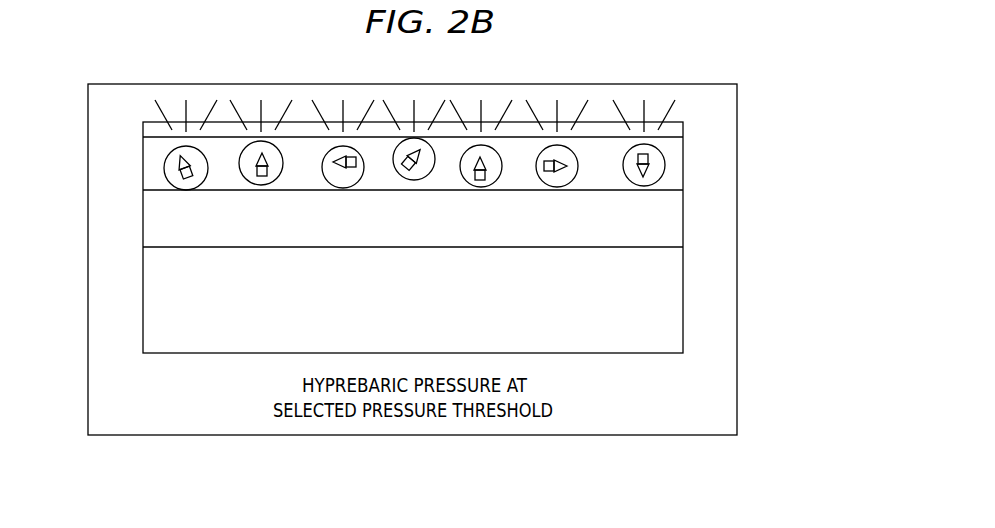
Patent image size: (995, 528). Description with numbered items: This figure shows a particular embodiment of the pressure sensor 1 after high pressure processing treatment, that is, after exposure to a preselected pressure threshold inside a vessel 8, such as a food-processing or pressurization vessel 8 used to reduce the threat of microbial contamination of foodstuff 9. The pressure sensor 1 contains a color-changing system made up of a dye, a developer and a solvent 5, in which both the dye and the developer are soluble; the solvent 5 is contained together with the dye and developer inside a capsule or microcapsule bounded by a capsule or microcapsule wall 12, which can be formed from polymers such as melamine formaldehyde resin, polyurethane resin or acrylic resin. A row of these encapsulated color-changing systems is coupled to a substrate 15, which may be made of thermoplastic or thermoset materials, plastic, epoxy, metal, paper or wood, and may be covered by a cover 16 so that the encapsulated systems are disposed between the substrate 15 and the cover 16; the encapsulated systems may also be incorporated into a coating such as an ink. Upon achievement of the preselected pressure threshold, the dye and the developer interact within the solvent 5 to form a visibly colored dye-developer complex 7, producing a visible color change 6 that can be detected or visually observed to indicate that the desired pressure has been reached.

The pressure sensor 1 is at (130, 161).
The solvent 5 is at (277, 167).
The visible color change 6 is at (243, 148).
The visibly colored dye-developer complex 7 is at (261, 177).
The vessel 8 is at (737, 395).
The foodstuff 9 is at (667, 328).
The capsule or microcapsule wall 12 is at (238, 105).
The substrate 15 is at (172, 229).
The cover 16 is at (522, 128).